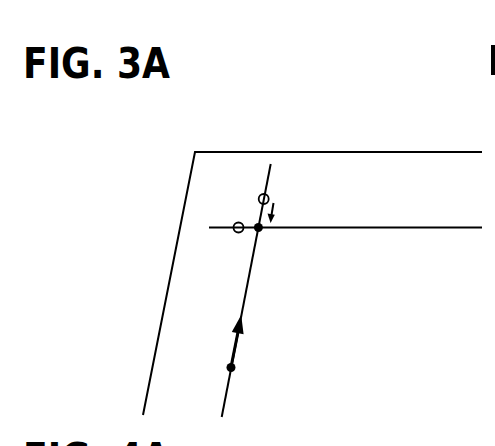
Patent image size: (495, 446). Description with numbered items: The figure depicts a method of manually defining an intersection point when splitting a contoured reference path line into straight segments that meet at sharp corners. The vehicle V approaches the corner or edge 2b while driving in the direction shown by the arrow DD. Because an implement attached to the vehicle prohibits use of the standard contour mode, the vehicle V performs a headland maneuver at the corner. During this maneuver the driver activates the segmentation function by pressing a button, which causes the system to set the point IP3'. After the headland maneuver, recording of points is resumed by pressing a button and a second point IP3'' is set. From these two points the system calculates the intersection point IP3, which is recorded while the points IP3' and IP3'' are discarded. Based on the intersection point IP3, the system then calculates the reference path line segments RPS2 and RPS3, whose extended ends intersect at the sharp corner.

The corner or edge 2b is at (195, 152).
The reference path line segment RPS2 is at (243, 315).
The reference path line segment RPS3 is at (378, 232).
The intersection point IP3 is at (288, 242).
The point IP3' is at (307, 184).
The point IP3'' is at (215, 261).
The driving direction arrow DD is at (224, 341).
The vehicle V is at (229, 366).